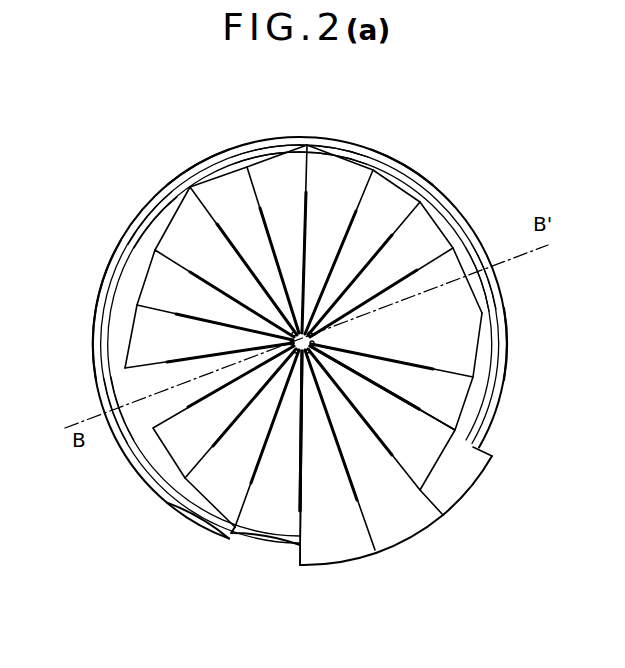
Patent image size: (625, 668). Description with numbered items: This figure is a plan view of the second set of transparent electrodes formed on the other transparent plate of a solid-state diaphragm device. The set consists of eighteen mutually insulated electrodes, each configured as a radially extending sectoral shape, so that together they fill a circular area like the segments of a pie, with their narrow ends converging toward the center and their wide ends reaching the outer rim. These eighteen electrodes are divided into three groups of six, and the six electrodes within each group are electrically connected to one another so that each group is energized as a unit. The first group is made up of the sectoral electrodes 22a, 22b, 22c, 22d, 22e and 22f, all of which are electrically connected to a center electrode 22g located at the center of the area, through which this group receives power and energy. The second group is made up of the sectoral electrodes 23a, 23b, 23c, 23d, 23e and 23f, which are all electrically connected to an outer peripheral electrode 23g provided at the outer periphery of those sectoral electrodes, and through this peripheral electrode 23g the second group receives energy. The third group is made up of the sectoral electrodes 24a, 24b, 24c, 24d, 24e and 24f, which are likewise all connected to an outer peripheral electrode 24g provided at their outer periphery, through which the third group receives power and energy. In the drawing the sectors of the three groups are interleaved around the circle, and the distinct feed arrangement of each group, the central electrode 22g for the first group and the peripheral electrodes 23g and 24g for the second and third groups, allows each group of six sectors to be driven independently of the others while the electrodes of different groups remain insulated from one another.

The sectoral electrode 22a is at (333, 552).
The sectoral electrode 22b is at (470, 403).
The sectoral electrode 22c is at (425, 238).
The sectoral electrode 22d is at (279, 165).
The sectoral electrode 22e is at (145, 288).
The sectoral electrode 22f is at (170, 455).
The center electrode 22g is at (302, 398).
The sectoral electrode 23a is at (413, 522).
The sectoral electrode 23b is at (498, 355).
The sectoral electrode 23c is at (396, 178).
The sectoral electrode 23d is at (228, 185).
The sectoral electrode 23e is at (135, 338).
The sectoral electrode 23f is at (215, 506).
The outer peripheral electrode 23g is at (158, 218).
The sectoral electrode 24a is at (468, 482).
The sectoral electrode 24b is at (478, 270).
The sectoral electrode 24c is at (336, 158).
The sectoral electrode 24d is at (180, 210).
The sectoral electrode 24e is at (130, 382).
The sectoral electrode 24f is at (272, 538).
The outer peripheral electrode 24g is at (262, 148).